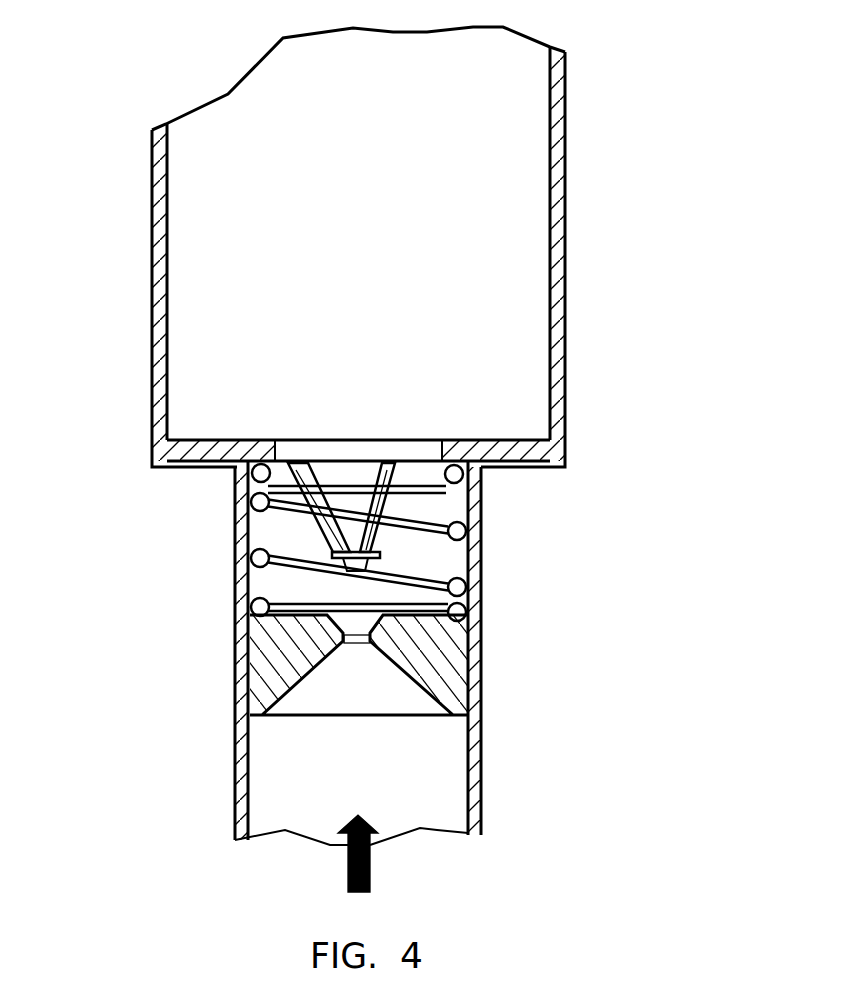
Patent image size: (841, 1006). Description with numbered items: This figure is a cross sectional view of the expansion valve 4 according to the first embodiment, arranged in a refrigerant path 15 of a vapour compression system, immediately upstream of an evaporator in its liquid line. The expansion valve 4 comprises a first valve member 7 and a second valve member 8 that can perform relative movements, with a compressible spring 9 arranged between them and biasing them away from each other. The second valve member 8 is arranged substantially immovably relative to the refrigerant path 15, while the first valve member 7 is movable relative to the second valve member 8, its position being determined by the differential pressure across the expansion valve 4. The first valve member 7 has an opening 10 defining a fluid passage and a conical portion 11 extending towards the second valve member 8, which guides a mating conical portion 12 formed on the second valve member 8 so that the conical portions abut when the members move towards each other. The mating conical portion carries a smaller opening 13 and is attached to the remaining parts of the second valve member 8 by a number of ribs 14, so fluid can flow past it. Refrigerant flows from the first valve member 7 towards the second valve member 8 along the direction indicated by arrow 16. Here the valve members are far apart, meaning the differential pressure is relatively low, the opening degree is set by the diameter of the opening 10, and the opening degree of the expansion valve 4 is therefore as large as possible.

The refrigerant path 15 is at (257, 195).
The expansion valve 4 is at (600, 571).
The second valve member 8 is at (425, 472).
The ribs 14 is at (365, 485).
The mating conical portion 12 is at (385, 555).
The compressible spring 9 is at (408, 577).
The opening 13 is at (360, 569).
The first valve member 7 is at (445, 667).
The conical portion 11 is at (327, 617).
The opening 10 is at (358, 643).
The arrow 16 is at (371, 872).